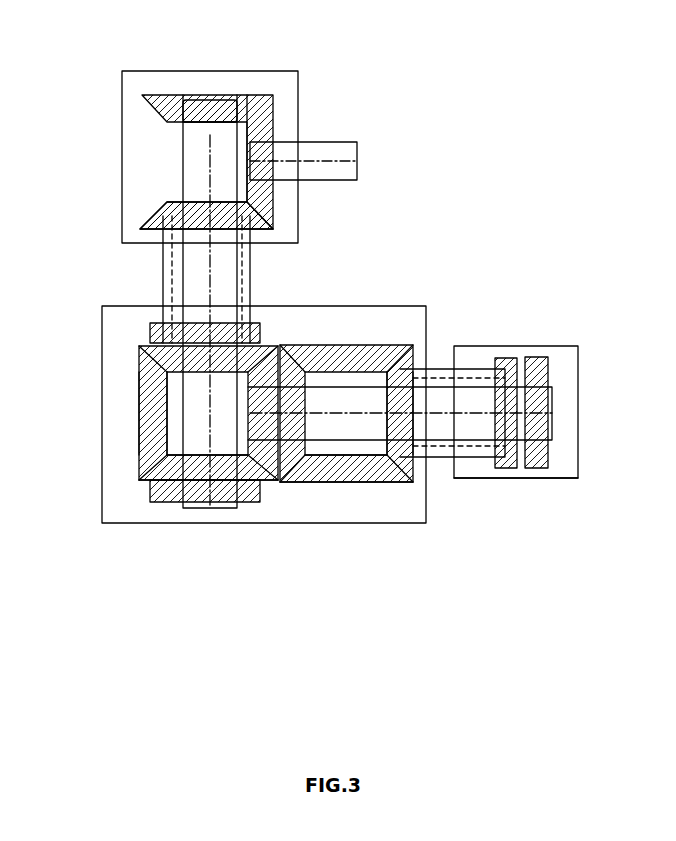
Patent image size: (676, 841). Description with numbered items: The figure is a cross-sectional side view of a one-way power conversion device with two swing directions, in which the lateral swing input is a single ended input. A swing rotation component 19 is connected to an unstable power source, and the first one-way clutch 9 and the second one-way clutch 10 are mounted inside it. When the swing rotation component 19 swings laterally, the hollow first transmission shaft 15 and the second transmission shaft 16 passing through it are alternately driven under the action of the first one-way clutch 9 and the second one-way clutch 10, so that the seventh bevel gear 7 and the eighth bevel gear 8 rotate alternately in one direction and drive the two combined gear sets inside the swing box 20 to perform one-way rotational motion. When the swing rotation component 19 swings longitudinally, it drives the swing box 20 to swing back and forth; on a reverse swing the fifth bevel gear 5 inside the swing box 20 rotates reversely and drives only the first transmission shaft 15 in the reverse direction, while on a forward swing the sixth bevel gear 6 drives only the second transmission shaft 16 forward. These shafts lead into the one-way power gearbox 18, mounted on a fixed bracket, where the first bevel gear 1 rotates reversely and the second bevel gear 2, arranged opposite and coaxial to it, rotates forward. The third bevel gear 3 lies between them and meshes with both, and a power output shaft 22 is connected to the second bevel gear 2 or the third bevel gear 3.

The first bevel gear 1 is at (161, 199).
The second bevel gear 2 is at (247, 137).
The third bevel gear 3 is at (306, 159).
The fifth bevel gear 5 is at (237, 370).
The sixth bevel gear 6 is at (283, 515).
The seventh bevel gear 7 is at (272, 377).
The eighth bevel gear 8 is at (276, 442).
The first one-way clutch 9 is at (363, 364).
The second one-way clutch 10 is at (352, 448).
The first transmission shaft 15 is at (170, 262).
The second transmission shaft 16 is at (350, 310).
The one-way power gearbox 18 is at (210, 140).
The swing rotation component 19 is at (550, 492).
The swing box 20 is at (264, 467).
The power output shaft 22 is at (325, 152).